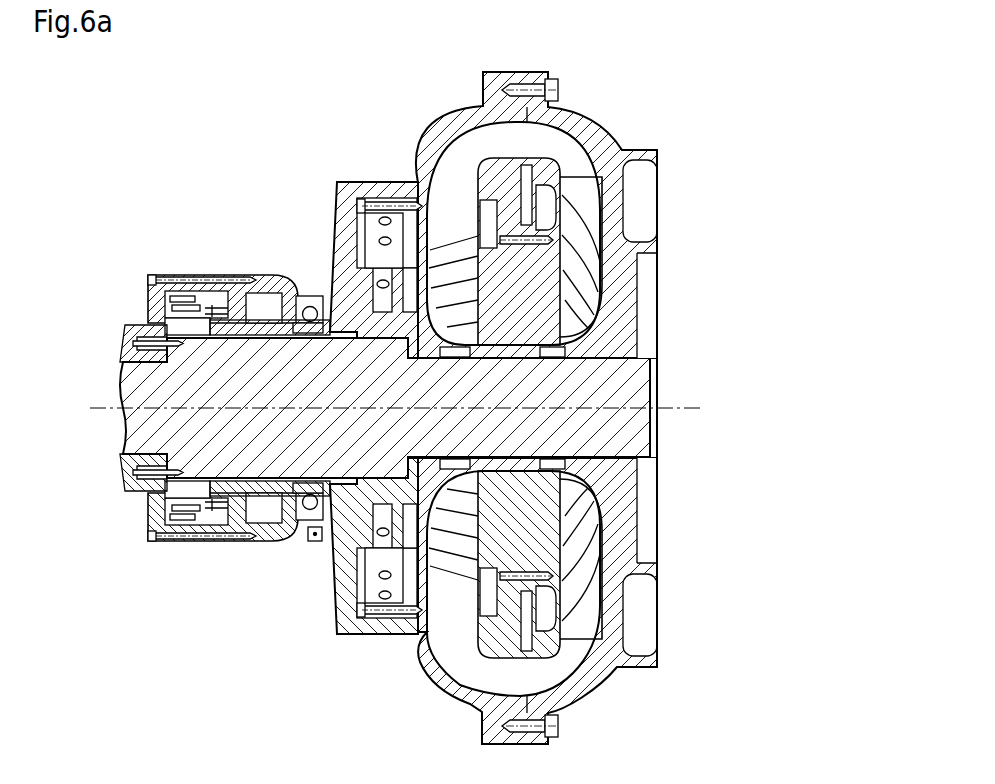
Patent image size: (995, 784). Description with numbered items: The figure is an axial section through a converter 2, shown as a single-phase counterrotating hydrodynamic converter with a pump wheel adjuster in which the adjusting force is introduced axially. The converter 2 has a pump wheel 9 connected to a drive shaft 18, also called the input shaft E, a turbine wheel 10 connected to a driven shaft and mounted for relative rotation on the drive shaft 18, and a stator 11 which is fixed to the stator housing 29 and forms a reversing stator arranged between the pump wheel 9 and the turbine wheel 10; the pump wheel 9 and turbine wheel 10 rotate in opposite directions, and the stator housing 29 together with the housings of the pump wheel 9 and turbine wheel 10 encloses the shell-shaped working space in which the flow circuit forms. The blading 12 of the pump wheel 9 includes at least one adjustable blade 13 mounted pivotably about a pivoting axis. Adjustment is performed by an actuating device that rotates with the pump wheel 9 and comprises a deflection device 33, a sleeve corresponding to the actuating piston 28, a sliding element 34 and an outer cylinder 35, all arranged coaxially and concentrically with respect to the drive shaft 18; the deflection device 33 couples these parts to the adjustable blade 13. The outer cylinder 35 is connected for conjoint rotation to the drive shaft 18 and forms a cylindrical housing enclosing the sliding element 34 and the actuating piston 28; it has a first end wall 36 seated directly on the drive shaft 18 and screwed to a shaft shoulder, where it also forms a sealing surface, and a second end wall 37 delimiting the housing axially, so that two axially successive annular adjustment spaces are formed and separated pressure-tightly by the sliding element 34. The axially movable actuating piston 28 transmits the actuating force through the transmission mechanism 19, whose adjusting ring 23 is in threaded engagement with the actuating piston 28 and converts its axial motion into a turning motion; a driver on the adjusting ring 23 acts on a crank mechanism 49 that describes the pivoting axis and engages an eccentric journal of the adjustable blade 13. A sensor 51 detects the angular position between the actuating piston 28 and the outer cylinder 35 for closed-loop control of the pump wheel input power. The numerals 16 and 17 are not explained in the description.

The converter 2 is at (357, 366).
The bearing housing 16 is at (357, 366).
The pump wheel 9 is at (473, 258).
The turbine wheel 10 is at (570, 351).
The stator 11 is at (565, 375).
The blading 12 is at (262, 110).
The adjustable blade 13 is at (515, 408).
The shaft seal arrangement 17 is at (203, 380).
The input shaft E is at (225, 466).
The drive shaft 18 is at (238, 450).
The transmission mechanism 19 is at (394, 172).
The adjusting ring 23 is at (358, 292).
The actuating piston 28 is at (252, 301).
The stator housing 29 is at (522, 78).
The deflection device 33 is at (374, 371).
The sliding element 34 is at (203, 313).
The outer cylinder 35 is at (270, 530).
The first end wall 36 is at (148, 290).
The second end wall 37 is at (272, 287).
The crank mechanism 49 is at (383, 606).
The sensor 51 is at (312, 545).